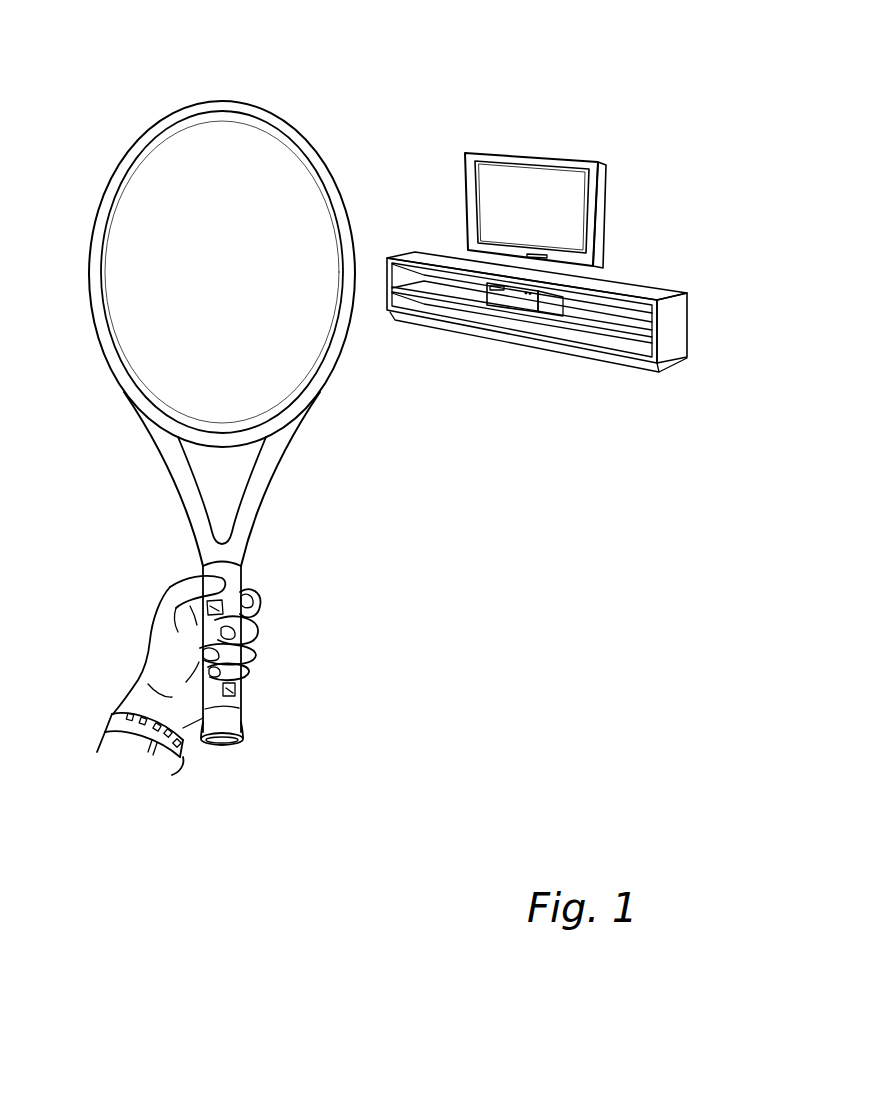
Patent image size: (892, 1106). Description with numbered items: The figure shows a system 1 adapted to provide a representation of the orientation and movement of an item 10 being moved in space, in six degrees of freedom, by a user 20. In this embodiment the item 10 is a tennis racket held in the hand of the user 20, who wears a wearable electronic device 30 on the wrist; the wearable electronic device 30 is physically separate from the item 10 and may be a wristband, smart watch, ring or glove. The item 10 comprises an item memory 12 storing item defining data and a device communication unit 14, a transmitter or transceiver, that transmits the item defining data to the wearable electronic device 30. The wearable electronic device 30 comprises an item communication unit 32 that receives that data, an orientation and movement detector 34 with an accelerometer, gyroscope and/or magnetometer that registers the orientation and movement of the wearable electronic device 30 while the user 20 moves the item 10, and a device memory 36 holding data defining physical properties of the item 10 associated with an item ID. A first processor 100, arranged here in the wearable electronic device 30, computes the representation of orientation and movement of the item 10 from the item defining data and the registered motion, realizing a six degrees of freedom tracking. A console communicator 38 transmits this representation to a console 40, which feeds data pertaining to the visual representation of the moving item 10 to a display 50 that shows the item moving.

The system 1 is at (740, 75).
The item 10 is at (215, 101).
The item memory 12 is at (237, 686).
The device communication unit 14 is at (183, 586).
The user 20 is at (165, 763).
The wearable electronic device 30 is at (117, 714).
The item communication unit 32 is at (208, 747).
The orientation and movement detector 34 is at (130, 728).
The device memory 36 is at (210, 712).
The console communicator 38 is at (138, 741).
The console 40 is at (523, 302).
The display 50 is at (570, 158).
The first processor 100 is at (172, 742).